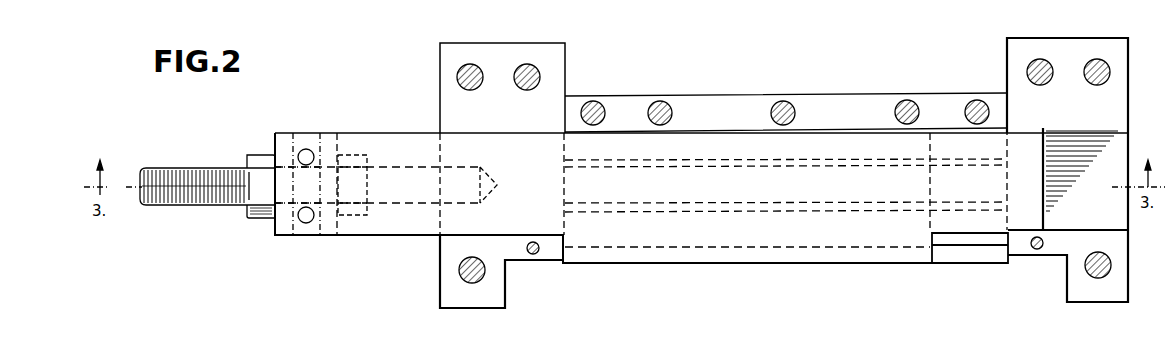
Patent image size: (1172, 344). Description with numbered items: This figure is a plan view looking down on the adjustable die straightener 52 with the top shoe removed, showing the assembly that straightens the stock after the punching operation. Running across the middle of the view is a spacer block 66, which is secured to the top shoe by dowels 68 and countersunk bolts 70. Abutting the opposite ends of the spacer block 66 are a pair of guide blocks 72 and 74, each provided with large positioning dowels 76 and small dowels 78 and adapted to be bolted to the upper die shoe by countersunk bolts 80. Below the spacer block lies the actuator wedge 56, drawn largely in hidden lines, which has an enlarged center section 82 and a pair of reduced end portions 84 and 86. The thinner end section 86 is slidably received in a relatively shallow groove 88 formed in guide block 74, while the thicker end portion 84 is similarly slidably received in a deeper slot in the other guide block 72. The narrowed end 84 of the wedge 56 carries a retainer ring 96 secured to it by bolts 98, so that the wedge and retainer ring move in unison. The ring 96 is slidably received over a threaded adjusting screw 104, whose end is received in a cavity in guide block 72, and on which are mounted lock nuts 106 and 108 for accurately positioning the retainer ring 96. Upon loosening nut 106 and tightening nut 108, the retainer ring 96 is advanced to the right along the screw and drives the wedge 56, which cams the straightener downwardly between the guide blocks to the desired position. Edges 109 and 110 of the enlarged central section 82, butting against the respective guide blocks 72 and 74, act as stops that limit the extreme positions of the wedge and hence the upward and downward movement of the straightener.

The adjustable die straightener 52 is at (716, 172).
The actuator wedge 56 is at (853, 227).
The spacer block 66 is at (735, 102).
The dowels 68 is at (664, 106).
The countersunk bolts 70 is at (597, 106).
The guide block 72 is at (440, 106).
The guide block 74 is at (1120, 110).
The large positioning dowels 76 is at (470, 66).
The small dowels 78 is at (534, 255).
The countersunk bolts 80 is at (530, 66).
The enlarged center section 82 is at (683, 257).
The thicker end portion 84 is at (382, 231).
The thinner end section 86 is at (1027, 215).
The shallow groove 88 is at (1112, 220).
The retainer ring 96 is at (330, 228).
The bolts 98 is at (305, 149).
The threaded adjusting screw 104 is at (178, 206).
The lock nut 106 is at (356, 228).
The lock nut 108 is at (262, 219).
The edge 109 is at (940, 257).
The edge 110 is at (566, 265).